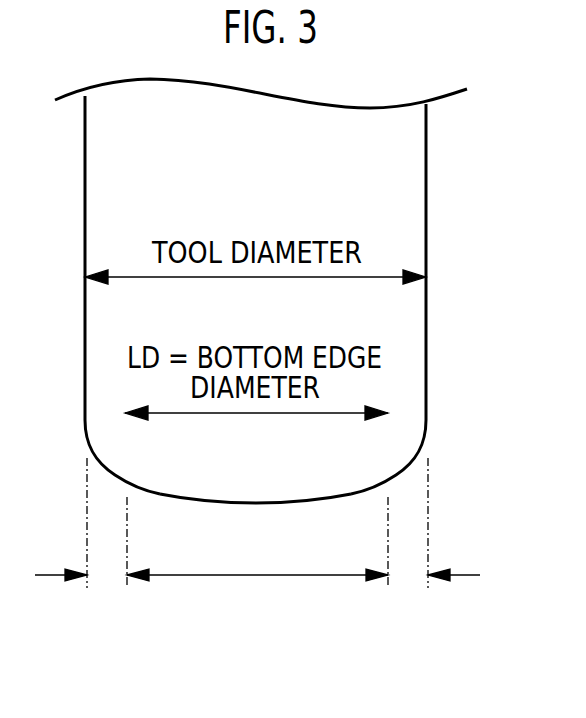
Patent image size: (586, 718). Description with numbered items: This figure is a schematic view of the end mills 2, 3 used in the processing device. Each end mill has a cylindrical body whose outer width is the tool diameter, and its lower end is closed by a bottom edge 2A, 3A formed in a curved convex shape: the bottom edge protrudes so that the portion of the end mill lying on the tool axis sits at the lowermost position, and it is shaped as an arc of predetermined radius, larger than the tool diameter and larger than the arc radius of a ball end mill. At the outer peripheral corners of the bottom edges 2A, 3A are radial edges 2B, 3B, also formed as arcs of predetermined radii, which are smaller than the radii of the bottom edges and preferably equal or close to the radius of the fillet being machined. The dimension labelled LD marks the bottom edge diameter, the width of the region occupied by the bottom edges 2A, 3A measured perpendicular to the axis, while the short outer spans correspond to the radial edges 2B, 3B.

The end mill 2 is at (287, 249).
The end mill 3 is at (408, 159).
The bottom edge 2A is at (257, 585).
The bottom edge 3A is at (257, 575).
The radial edge 2B is at (257, 548).
The radial edge 3B is at (108, 575).